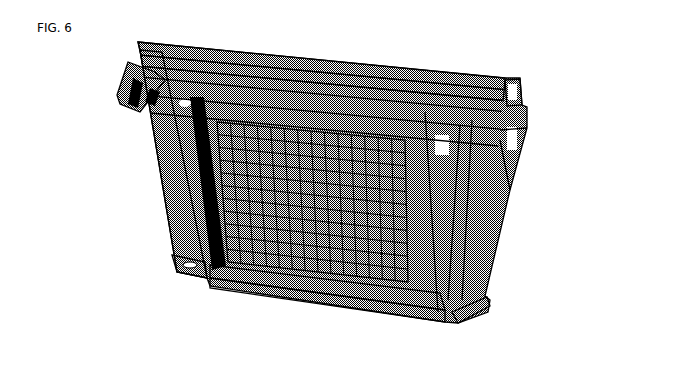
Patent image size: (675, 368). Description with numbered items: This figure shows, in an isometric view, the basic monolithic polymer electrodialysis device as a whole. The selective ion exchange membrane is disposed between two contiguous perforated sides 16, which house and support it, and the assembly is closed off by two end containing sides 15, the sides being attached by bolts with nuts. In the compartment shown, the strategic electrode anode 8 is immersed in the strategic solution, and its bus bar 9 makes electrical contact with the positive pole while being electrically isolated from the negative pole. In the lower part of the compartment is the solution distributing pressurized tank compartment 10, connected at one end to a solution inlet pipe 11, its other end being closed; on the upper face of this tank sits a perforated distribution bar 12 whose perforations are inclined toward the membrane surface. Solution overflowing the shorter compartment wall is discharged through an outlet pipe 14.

The anode 8 is at (290, 92).
The bus bar 9 is at (368, 90).
The solution distributing pressurized tank compartment 10 is at (292, 299).
The solution inlet pipe 11 is at (175, 260).
The perforated distribution bar 12 is at (238, 287).
The outlet pipe 14 is at (485, 301).
The end containing sides 15 is at (522, 82).
The contiguous perforated sides 16 is at (147, 155).